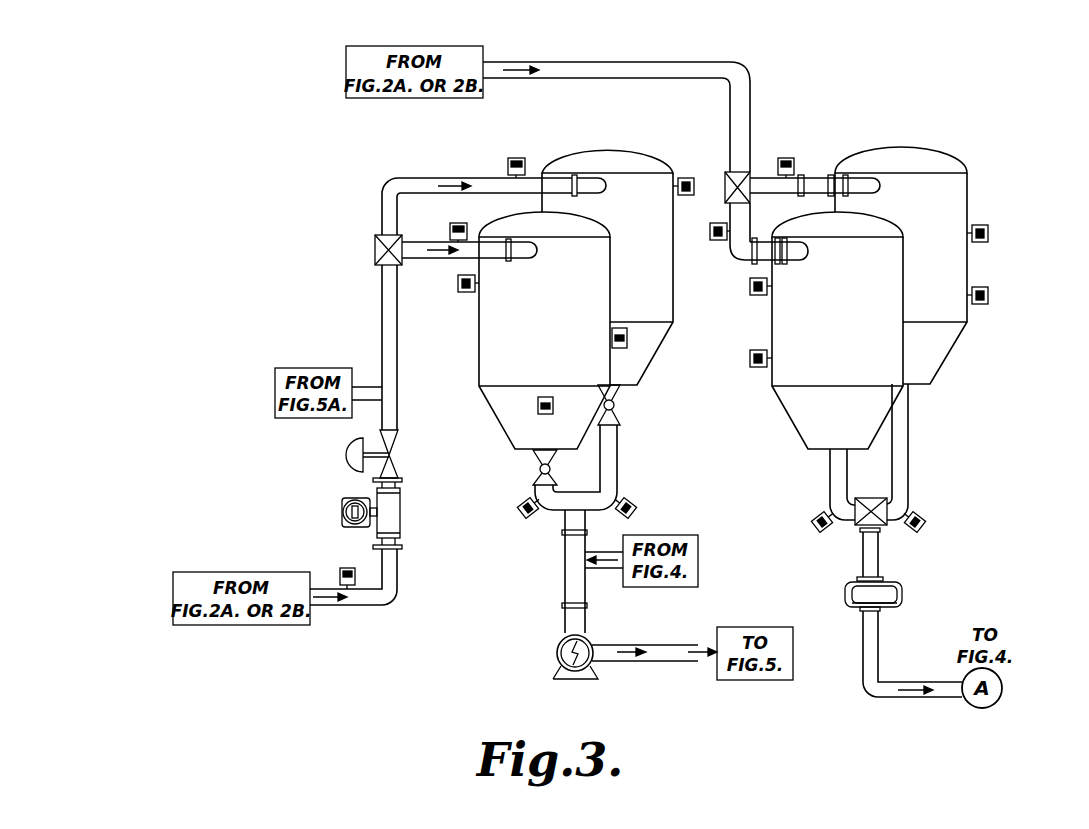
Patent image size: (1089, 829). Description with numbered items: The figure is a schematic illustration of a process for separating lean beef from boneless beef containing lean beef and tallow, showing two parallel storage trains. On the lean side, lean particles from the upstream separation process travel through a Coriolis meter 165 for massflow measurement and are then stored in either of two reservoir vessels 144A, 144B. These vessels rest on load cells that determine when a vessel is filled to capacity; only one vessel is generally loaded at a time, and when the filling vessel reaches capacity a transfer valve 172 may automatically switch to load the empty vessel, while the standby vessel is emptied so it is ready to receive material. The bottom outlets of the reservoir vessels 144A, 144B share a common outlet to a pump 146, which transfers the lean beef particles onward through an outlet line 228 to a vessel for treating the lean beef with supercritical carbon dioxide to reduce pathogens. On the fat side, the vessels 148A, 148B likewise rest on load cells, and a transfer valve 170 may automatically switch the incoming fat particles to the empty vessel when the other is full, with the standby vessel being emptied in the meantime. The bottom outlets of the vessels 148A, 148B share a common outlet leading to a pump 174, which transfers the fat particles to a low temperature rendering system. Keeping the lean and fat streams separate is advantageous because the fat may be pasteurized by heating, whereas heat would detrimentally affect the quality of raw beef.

The reservoir vessel 144A is at (479, 330).
The reservoir vessel 144B is at (673, 303).
The vessel 148A is at (772, 375).
The vessel 148B is at (967, 182).
The pump 146 is at (556, 648).
The Coriolis meter 165 is at (400, 512).
The transfer valve 170 is at (750, 172).
The transfer valve 172 is at (375, 238).
The pump 174 is at (902, 590).
The outlet line 228 is at (660, 645).